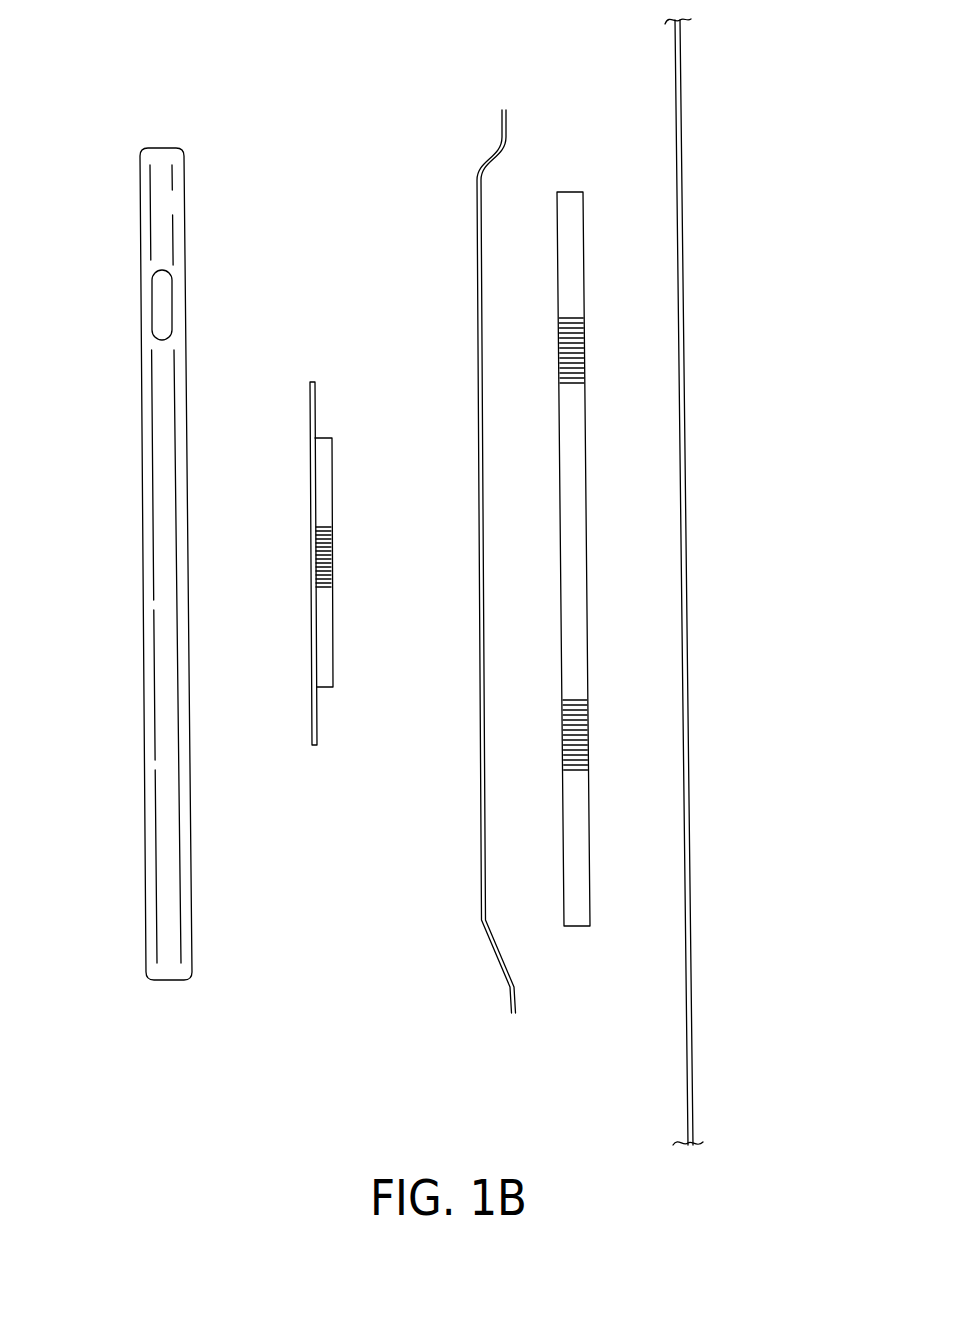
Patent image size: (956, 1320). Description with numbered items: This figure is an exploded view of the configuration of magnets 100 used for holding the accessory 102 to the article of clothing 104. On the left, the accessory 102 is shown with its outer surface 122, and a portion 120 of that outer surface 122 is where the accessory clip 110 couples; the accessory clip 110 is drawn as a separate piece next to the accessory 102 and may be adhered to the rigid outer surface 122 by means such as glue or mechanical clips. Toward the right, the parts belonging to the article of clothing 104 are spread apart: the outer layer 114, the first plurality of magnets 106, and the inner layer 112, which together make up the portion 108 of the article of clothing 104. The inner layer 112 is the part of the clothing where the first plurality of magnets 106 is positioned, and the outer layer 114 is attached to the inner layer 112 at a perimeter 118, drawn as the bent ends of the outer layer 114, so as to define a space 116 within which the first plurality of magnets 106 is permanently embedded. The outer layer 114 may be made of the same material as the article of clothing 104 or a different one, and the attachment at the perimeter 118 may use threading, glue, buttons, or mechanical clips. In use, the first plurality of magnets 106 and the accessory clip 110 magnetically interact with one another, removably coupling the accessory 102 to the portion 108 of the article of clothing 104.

The configuration of magnets 100 is at (838, 107).
The accessory 102 is at (160, 148).
The article of clothing 104 is at (692, 1093).
The first plurality of magnets 106 is at (570, 192).
The portion of the article of clothing 108 is at (689, 950).
The accessory clip 110 is at (310, 413).
The inner layer 112 is at (683, 290).
The outer layer 114 is at (477, 279).
The space 116 is at (532, 729).
The perimeter 118 is at (497, 128).
The portion of the outer surface 120 is at (186, 452).
The outer surface 122 is at (192, 930).